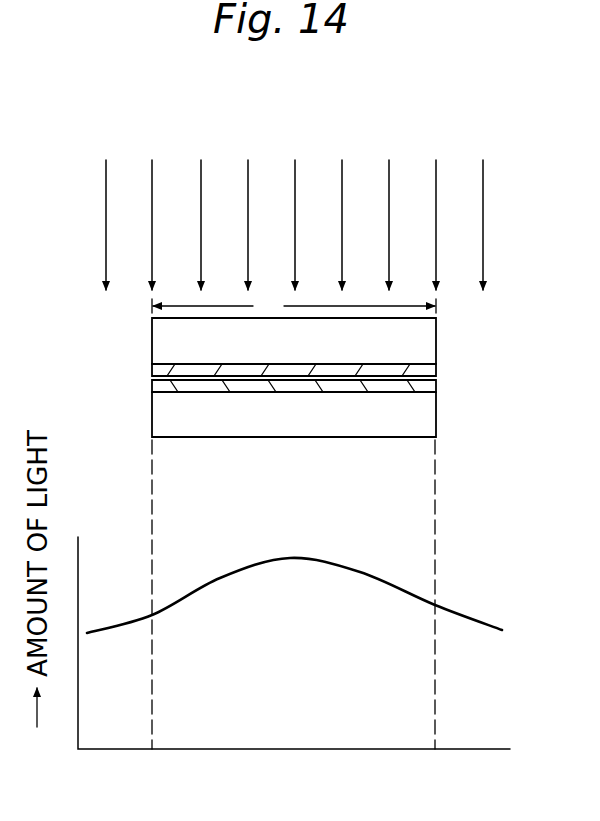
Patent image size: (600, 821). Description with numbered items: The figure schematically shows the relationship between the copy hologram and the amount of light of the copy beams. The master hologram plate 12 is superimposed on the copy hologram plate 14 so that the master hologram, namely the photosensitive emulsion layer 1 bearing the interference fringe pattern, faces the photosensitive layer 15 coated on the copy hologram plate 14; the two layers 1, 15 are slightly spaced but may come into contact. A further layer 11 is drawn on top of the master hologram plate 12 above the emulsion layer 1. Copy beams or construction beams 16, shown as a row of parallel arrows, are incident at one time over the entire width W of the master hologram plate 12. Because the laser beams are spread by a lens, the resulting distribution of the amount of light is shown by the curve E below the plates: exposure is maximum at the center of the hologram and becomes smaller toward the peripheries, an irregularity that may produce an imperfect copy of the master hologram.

The copy beams 16 is at (476, 236).
The protective layer 11 is at (428, 332).
The master hologram plate 12 is at (337, 336).
The photosensitive emulsion layer 1 is at (437, 370).
The photosensitive layer 15 is at (437, 386).
The copy hologram plate 14 is at (445, 410).
The curve E is at (474, 618).
The width W is at (294, 305).